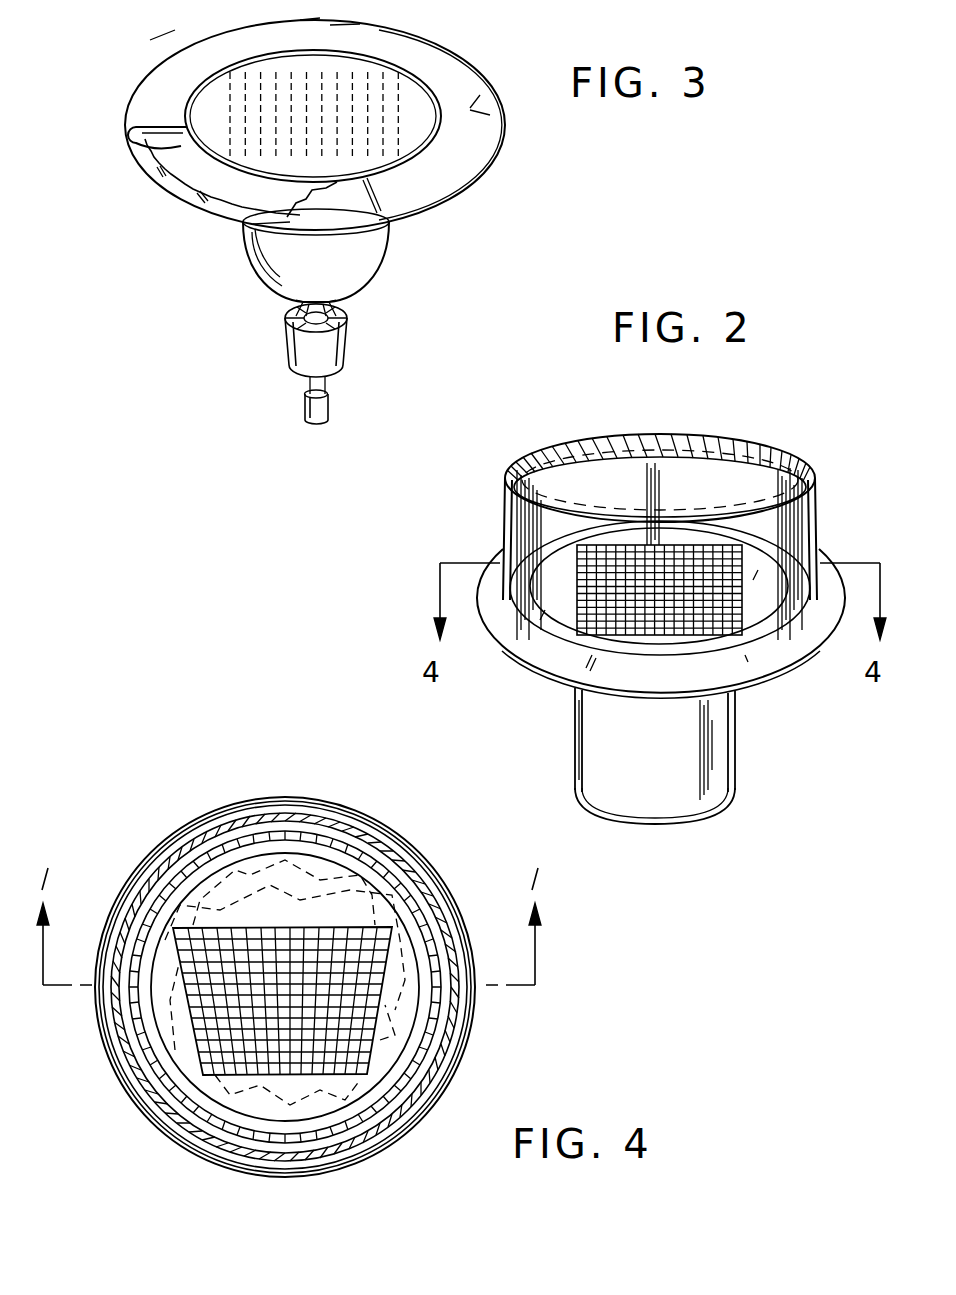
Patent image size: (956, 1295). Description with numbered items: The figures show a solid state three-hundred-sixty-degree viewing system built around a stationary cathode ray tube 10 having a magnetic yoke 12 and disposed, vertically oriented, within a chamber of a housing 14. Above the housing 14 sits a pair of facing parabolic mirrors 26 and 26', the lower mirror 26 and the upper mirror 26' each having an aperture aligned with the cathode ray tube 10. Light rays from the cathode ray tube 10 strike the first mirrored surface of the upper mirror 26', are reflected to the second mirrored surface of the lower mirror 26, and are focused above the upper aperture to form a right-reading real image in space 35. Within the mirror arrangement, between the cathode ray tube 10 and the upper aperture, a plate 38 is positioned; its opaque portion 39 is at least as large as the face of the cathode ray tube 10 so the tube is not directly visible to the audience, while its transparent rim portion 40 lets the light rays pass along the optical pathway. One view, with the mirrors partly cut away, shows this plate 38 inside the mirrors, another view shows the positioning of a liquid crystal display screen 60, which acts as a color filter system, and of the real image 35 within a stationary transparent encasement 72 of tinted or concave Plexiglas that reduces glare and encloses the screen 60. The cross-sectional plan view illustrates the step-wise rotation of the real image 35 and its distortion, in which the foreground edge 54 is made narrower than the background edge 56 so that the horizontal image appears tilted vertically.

In FIG. 3, the cathode ray tube 10 is at (347, 270).
In FIG. 3, the magnetic yoke 12 is at (340, 347).
In FIG. 2, the housing 14 is at (673, 782).
In FIG. 3, the lower parabolic mirror 26 is at (116, 154).
In FIG. 4, the lower parabolic mirror 26 is at (285, 963).
In FIG. 3, the upper parabolic mirror 26' is at (311, 119).
In FIG. 2, the upper parabolic mirror 26' is at (653, 631).
In FIG. 4, the upper parabolic mirror 26' is at (285, 998).
In FIG. 3, the real image in space 35 is at (357, 93).
In FIG. 2, the real image in space 35 is at (703, 582).
In FIG. 4, the real image in space 35 is at (357, 1020).
In FIG. 3, the plate 38 is at (218, 219).
In FIG. 2, the plate 38 is at (752, 617).
In FIG. 4, the plate 38 is at (402, 1037).
In FIG. 3, the opaque portion 39 is at (247, 180).
In FIG. 3, the transparent rim portion 40 is at (173, 187).
In FIG. 4, the foreground edge 54 is at (358, 1077).
In FIG. 4, the background edge 56 is at (382, 927).
In FIG. 2, the liquid crystal display screen 60 is at (795, 520).
In FIG. 4, the liquid crystal display screen 60 is at (360, 1127).
In FIG. 2, the transparent encasement 72 is at (503, 513).
In FIG. 4, the transparent encasement 72 is at (243, 1157).